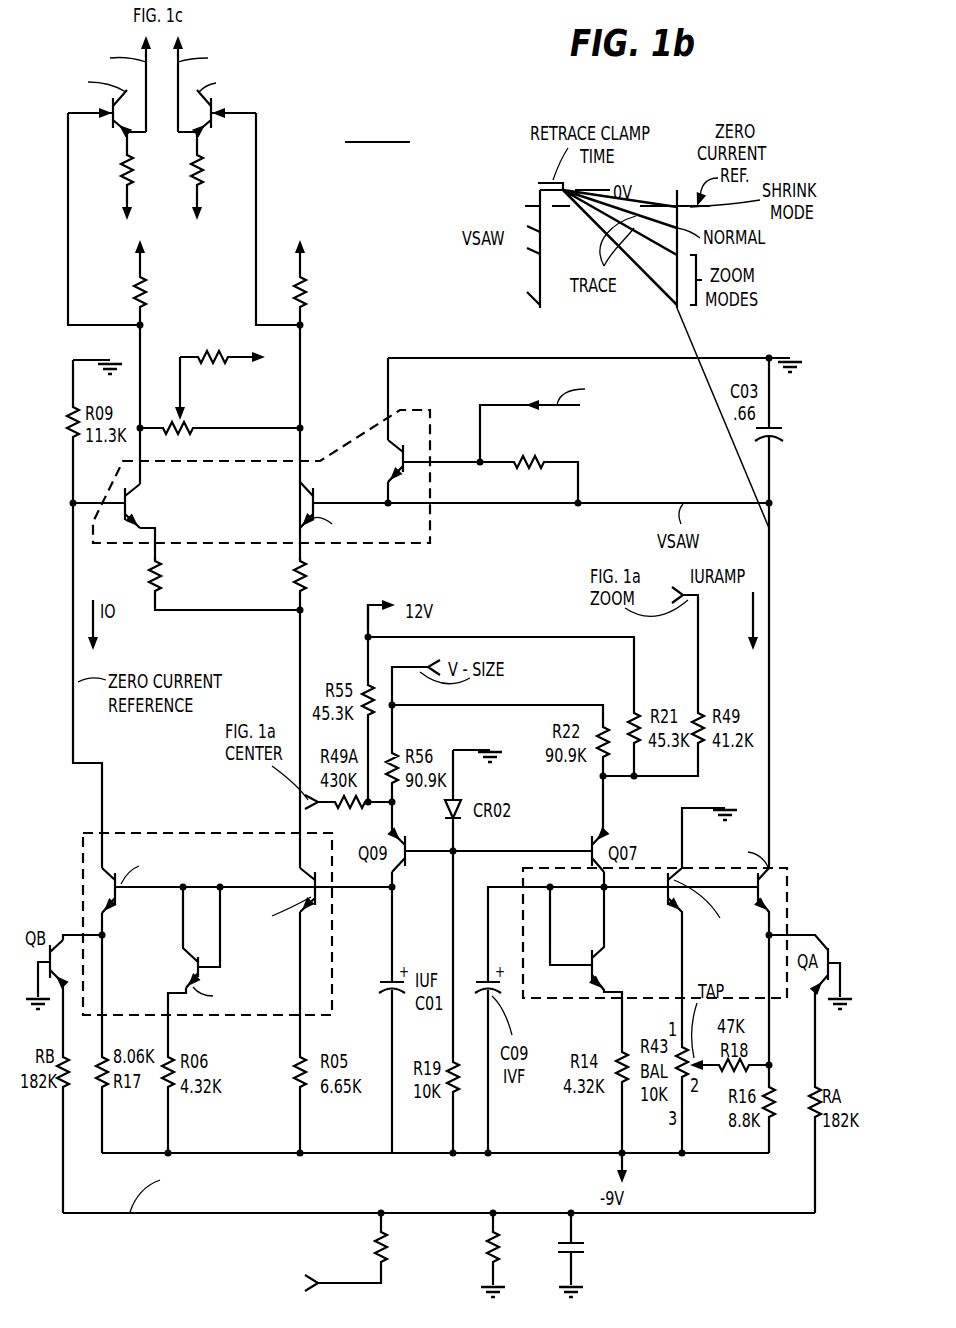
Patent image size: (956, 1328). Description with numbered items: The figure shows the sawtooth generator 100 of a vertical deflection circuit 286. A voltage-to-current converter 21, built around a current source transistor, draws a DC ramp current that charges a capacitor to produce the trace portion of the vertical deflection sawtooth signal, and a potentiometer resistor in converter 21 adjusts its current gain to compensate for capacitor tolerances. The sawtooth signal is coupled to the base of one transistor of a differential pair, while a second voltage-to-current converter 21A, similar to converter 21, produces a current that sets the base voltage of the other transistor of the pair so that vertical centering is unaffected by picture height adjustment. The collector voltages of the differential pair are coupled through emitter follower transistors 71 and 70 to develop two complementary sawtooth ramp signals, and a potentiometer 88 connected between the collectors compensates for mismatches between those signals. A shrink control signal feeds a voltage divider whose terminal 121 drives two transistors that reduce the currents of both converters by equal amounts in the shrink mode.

The vertical deflection circuit 286 is at (222, 182).
The emitter follower transistor 70 is at (117, 123).
The emitter follower transistor 71 is at (222, 106).
The potentiometer 88 is at (184, 420).
The sawtooth generator 100 is at (540, 554).
The second voltage-to-current converter 21A is at (175, 782).
The voltage-to-current converter 21 is at (653, 817).
The terminal 121 is at (405, 1212).